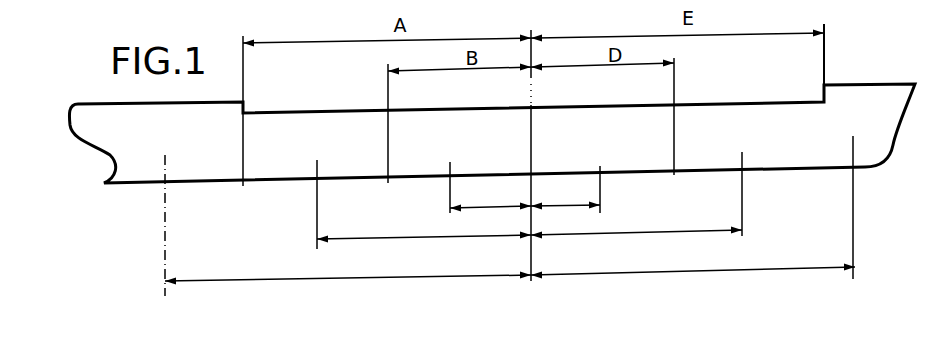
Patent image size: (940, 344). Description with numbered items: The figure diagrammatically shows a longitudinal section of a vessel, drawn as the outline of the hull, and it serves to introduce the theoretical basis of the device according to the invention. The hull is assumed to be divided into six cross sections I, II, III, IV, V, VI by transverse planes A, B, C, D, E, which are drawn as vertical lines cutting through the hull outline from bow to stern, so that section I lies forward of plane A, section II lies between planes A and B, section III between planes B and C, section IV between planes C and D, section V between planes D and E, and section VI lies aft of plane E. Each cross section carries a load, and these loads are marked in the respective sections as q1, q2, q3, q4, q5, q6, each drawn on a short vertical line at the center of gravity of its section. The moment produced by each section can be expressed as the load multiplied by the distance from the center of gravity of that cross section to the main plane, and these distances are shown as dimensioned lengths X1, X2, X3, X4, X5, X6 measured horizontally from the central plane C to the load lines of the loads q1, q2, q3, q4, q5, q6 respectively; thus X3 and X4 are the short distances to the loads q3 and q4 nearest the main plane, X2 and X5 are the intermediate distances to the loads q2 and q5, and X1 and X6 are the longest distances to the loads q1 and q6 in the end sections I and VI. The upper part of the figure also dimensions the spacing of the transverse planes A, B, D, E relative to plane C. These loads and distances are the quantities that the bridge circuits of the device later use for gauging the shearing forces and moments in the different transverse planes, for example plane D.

The cross section I is at (146, 83).
The cross section II is at (304, 83).
The cross section III is at (444, 86).
The cross section IV is at (589, 86).
The cross section V is at (741, 82).
The cross section VI is at (856, 63).
The transverse plane A is at (242, 120).
The transverse plane B is at (387, 132).
The transverse plane C is at (530, 155).
The transverse plane D is at (676, 126).
The transverse plane E is at (827, 108).
The load of cross section I q1 is at (164, 215).
The load of cross section II q2 is at (312, 192).
The load of cross section III q3 is at (452, 173).
The load of cross section IV q4 is at (597, 172).
The load of cross section V q5 is at (737, 183).
The load of cross section VI q6 is at (851, 199).
The distance of cross section I X1 is at (348, 268).
The distance of cross section II X2 is at (424, 228).
The distance of cross section III X3 is at (490, 199).
The distance of cross section IV X4 is at (565, 198).
The distance of cross section V X5 is at (636, 224).
The distance of cross section VI X6 is at (693, 262).